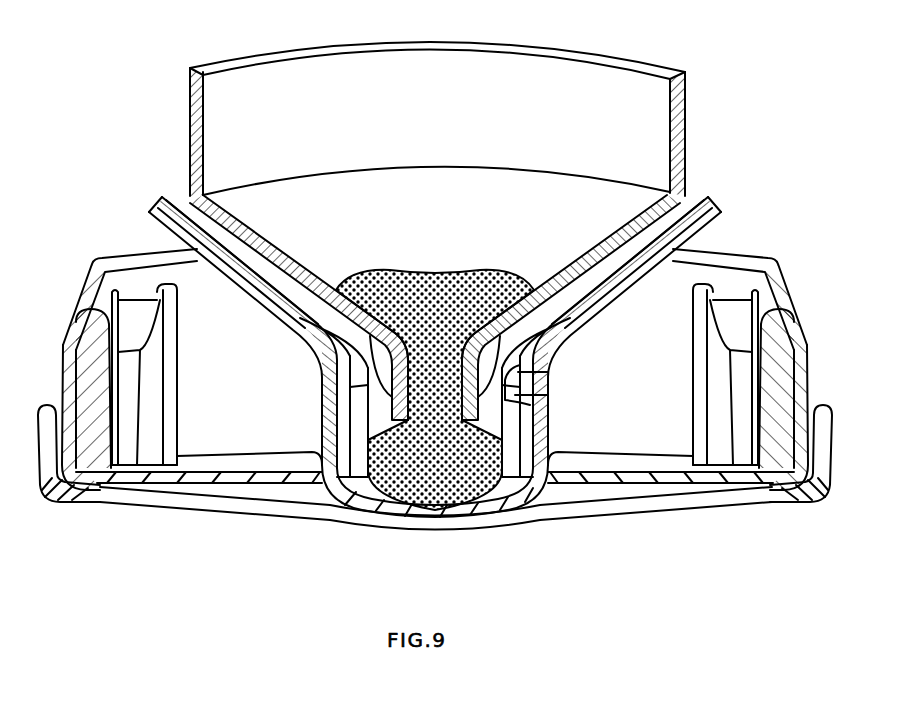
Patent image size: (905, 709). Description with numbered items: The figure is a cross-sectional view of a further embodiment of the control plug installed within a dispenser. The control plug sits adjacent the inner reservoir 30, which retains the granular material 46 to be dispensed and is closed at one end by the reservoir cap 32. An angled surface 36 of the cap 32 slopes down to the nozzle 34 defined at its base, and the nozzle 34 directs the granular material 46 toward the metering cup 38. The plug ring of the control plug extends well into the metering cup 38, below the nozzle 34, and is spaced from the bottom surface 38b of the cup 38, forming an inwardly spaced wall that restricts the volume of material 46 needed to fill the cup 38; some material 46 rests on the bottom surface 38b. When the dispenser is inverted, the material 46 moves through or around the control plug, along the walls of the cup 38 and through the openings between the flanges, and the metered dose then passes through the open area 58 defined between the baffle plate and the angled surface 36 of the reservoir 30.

The inner reservoir 30 is at (678, 118).
The reservoir cap 32 is at (277, 192).
The nozzle 34 is at (437, 362).
The angled surface 36 is at (388, 252).
The metering cup 38 is at (578, 455).
The bottom surface 38b is at (400, 492).
The granular material 46 is at (470, 290).
The open area 58 is at (212, 233).